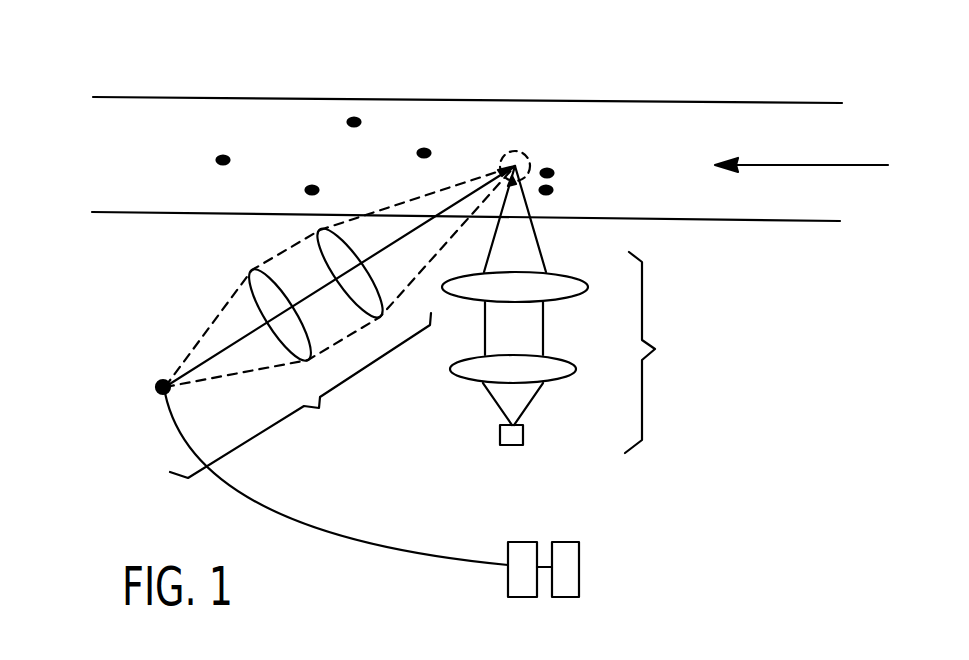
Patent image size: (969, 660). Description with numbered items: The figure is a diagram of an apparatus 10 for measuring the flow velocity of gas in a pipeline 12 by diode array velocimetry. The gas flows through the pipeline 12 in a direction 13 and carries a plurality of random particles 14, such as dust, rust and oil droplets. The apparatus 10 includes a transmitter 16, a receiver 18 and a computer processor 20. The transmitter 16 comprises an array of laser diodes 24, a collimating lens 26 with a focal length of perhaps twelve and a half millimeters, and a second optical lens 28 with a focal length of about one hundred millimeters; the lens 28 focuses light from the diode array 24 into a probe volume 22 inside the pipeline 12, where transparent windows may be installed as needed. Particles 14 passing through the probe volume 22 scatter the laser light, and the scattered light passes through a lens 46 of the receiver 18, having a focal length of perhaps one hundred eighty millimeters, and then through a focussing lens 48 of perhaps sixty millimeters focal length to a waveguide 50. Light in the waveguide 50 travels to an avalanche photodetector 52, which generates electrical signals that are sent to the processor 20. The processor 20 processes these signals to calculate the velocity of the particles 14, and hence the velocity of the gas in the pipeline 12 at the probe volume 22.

The apparatus 10 is at (749, 350).
The pipeline 12 is at (562, 100).
The direction 13 is at (803, 165).
The particles 14 is at (223, 155).
The transmitter 16 is at (660, 352).
The receiver 18 is at (300, 395).
The computer processor 20 is at (568, 552).
The probe volume 22 is at (515, 153).
The array of laser diodes 24 is at (500, 445).
The collimating lens 26 is at (465, 378).
The second optical lens 28 is at (555, 290).
The lens 46 is at (318, 252).
The focussing lens 48 is at (257, 302).
The waveguide 50 is at (158, 387).
The avalanche photodetector 52 is at (517, 541).